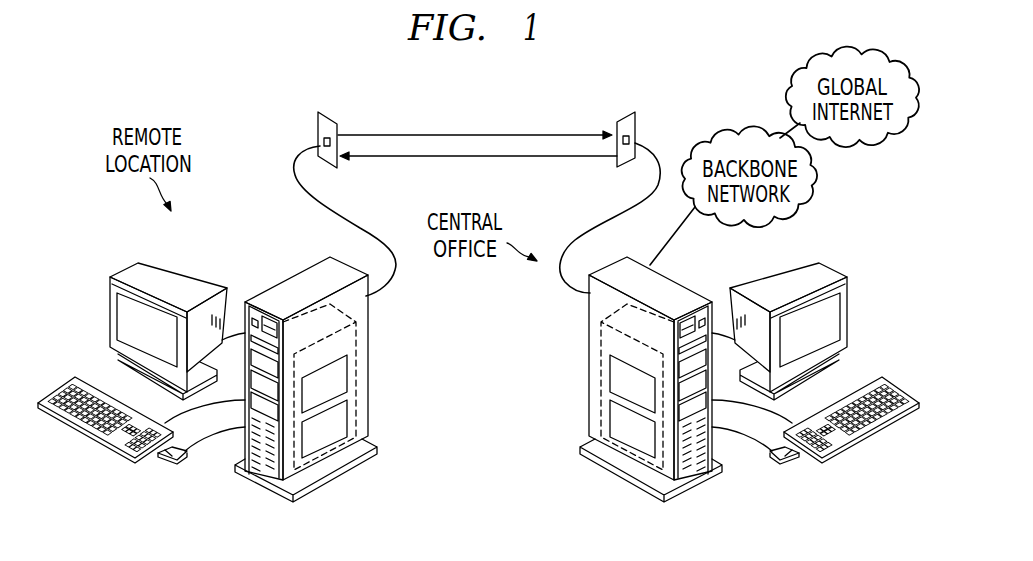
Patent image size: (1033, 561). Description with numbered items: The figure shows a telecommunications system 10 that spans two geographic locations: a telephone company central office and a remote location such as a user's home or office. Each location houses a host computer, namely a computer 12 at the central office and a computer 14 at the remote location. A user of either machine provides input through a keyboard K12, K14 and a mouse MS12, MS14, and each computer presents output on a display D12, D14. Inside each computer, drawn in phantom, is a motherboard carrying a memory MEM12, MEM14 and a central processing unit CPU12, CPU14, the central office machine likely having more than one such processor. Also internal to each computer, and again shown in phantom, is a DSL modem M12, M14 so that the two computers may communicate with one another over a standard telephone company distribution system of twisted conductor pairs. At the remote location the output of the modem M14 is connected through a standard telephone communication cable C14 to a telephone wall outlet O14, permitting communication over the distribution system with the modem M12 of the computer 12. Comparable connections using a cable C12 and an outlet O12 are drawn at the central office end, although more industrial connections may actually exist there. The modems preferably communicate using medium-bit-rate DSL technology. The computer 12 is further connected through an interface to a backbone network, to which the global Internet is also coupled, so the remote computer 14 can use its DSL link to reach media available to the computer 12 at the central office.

The system 10 is at (243, 101).
The computer 12 is at (646, 392).
The computer 14 is at (310, 393).
The telephone wall outlet O14 is at (327, 112).
The outlet O12 is at (624, 113).
The telephone communication cable C14 is at (293, 176).
The cable C12 is at (612, 213).
The display D14 is at (170, 268).
The display D12 is at (848, 301).
The modem M14 is at (369, 387).
The modem M12 is at (587, 387).
The memory MEM14 is at (343, 372).
The memory MEM12 is at (614, 372).
The central processing unit CPU14 is at (343, 415).
The central processing unit CPU12 is at (577, 429).
The keyboard K14 is at (92, 438).
The keyboard K12 is at (867, 437).
The mouse MS14 is at (172, 467).
The mouse MS12 is at (787, 462).